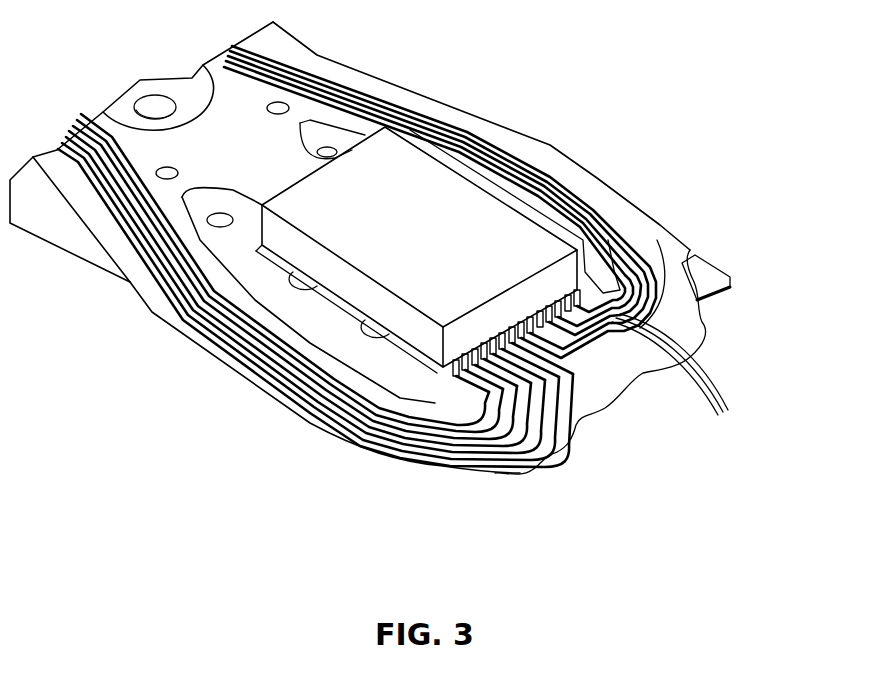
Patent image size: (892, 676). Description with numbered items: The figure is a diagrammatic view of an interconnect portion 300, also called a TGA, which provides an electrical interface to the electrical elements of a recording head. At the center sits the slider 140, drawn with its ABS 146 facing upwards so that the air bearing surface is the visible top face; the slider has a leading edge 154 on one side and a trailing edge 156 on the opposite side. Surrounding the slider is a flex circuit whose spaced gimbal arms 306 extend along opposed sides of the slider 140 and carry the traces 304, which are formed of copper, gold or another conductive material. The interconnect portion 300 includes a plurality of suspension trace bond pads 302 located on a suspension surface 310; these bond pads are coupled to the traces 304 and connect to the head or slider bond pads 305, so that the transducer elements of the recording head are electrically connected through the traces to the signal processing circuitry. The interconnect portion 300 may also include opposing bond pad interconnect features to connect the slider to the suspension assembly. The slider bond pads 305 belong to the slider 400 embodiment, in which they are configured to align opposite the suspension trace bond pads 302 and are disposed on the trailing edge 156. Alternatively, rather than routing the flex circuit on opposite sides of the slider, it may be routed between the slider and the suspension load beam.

The interconnect portion 300 is at (740, 330).
The suspension trace bond pads 302 is at (679, 374).
The traces 304 is at (500, 140).
The slider bond pads 305 is at (450, 377).
The gimbal arms 306 is at (570, 183).
The suspension surface 310 is at (707, 343).
The slider 140 is at (495, 250).
The ABS 146 is at (455, 264).
The leading edge 154 is at (347, 147).
The trailing edge 156 is at (540, 370).
The slider 400 is at (607, 212).